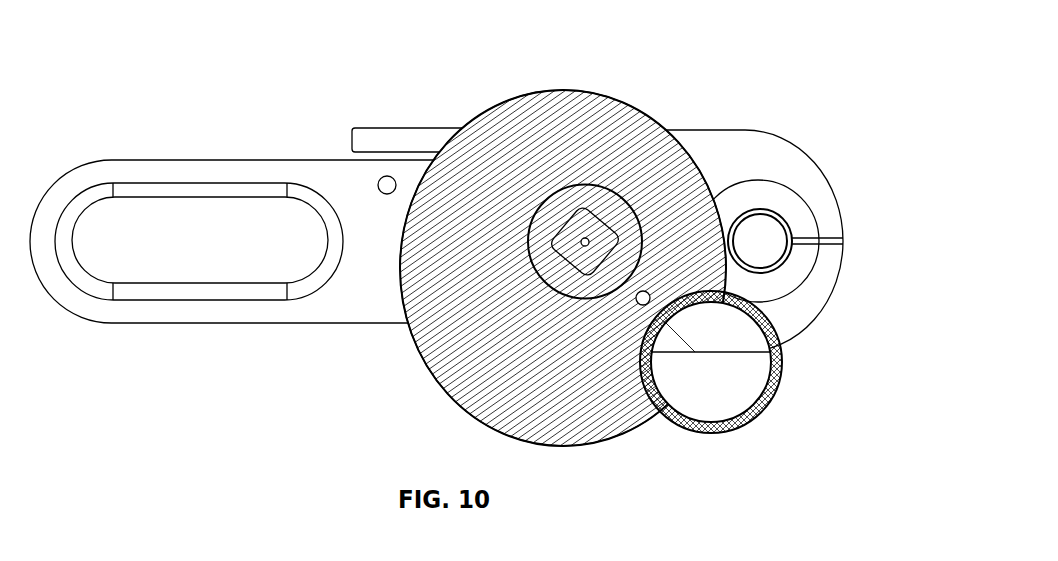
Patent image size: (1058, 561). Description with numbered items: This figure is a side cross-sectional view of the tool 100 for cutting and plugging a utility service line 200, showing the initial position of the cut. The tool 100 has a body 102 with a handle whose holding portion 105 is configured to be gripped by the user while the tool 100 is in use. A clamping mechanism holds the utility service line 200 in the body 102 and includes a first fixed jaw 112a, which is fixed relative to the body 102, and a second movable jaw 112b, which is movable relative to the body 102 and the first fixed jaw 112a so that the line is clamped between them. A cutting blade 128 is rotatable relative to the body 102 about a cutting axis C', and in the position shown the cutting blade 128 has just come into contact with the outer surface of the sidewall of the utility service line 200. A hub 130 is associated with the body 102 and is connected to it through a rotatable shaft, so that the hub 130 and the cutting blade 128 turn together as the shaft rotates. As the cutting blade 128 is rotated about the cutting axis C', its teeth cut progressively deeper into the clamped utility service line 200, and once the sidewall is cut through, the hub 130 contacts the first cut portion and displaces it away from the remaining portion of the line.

The tool 100 is at (762, 93).
The body 102 is at (365, 307).
The holding portion 105 is at (148, 312).
The first fixed jaw 112a is at (808, 180).
The second movable jaw 112b is at (827, 280).
The cutting blade 128 is at (633, 135).
The hub 130 is at (737, 427).
The utility service line 200 is at (792, 230).
The cutting axis C' is at (542, 184).